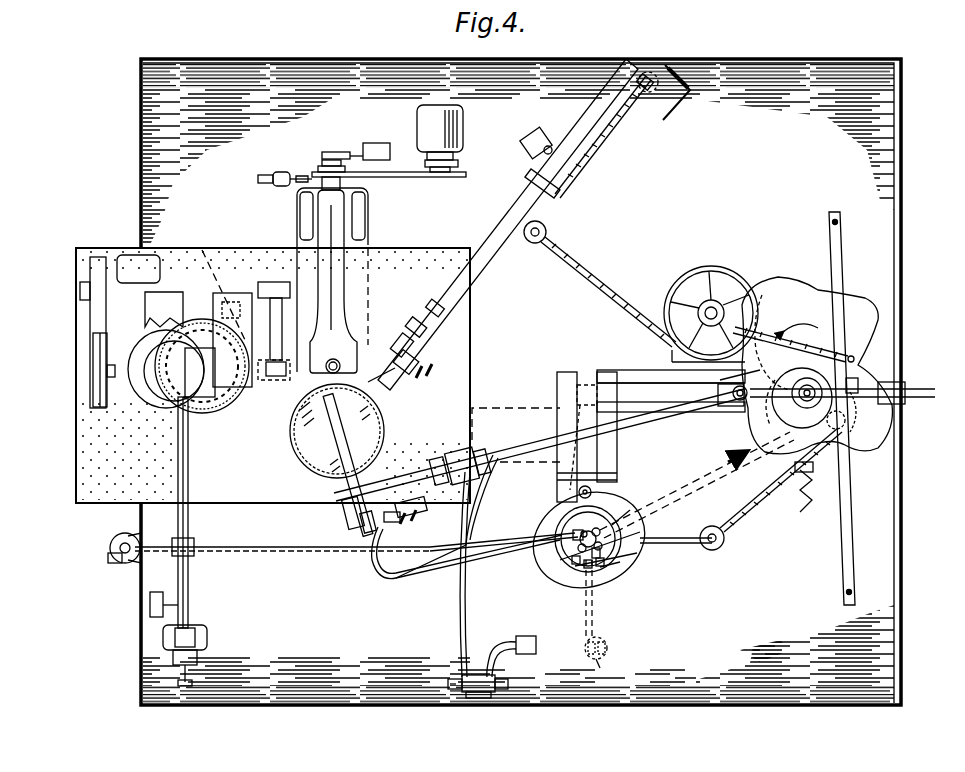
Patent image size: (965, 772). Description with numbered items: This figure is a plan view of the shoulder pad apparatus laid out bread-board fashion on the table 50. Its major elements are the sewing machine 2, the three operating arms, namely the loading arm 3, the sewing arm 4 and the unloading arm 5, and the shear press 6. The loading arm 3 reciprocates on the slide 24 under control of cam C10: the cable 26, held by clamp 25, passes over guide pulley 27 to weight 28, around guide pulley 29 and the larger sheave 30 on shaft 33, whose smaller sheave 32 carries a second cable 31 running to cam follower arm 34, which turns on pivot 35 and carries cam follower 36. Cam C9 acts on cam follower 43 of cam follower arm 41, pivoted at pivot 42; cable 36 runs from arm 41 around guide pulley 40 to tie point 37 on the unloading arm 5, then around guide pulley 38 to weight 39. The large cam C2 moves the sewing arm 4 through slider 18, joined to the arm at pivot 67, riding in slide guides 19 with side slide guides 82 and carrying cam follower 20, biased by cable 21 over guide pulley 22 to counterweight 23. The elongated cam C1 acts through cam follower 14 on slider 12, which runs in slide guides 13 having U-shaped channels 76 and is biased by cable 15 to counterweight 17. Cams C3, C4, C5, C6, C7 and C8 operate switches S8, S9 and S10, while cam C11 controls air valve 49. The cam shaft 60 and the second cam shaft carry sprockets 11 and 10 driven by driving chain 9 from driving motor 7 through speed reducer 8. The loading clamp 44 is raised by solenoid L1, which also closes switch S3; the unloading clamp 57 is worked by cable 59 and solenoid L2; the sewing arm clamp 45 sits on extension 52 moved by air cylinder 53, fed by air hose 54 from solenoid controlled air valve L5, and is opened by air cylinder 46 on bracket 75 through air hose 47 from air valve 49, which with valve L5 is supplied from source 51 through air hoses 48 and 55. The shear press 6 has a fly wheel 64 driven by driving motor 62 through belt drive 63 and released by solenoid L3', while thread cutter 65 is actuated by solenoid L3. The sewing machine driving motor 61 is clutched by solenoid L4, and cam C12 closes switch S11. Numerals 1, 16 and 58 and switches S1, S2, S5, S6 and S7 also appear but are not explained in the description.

The machine frame 1 is at (290, 440).
The sewing machine 2 is at (338, 268).
The loading arm 3 is at (492, 260).
The sewing arm 4 is at (520, 440).
The unloading arm 5 is at (190, 580).
The shear press 6 is at (232, 270).
The driving motor 7 is at (498, 410).
The speed reducer 8 is at (586, 375).
The driving chain 9 is at (698, 496).
The sprocket 10 is at (610, 575).
The sprocket 11 is at (785, 412).
The slider 12 is at (617, 480).
The slide guides 13 is at (617, 472).
The cam follower 14 is at (393, 460).
The cable 15 is at (596, 622).
The gear 16 is at (608, 650).
The counterweight 17 is at (604, 665).
The slider 18 is at (722, 408).
The slide guides 19 is at (675, 372).
The cam follower 20 is at (742, 405).
The cable 21 is at (397, 118).
The guide pulley 22 is at (898, 378).
The counterweight 23 is at (896, 404).
The slide 24 is at (606, 100).
The clamp 25 is at (562, 196).
The cable 26 is at (593, 155).
The guide pulley 27 is at (665, 97).
The weight 28 is at (652, 88).
The guide pulley 29 is at (548, 232).
The larger sheave 30 is at (727, 272).
The second cable 31 is at (766, 332).
The smaller sheave 32 is at (711, 301).
The shaft 33 is at (704, 315).
The cam follower arm 34 is at (845, 250).
The pivot 35 is at (832, 222).
The cable 36 is at (258, 547).
The tie point 37 is at (194, 545).
The guide pulley 38 is at (114, 560).
The weight 39 is at (112, 538).
The guide pulley 40 is at (722, 548).
The cam follower arm 41 is at (851, 498).
The pivot 42 is at (846, 592).
The cam follower 43 is at (844, 425).
The loading clamp 44 is at (370, 420).
The sewing arm clamp 45 is at (340, 440).
The air cylinder 46 is at (348, 515).
The air hose 47 is at (380, 574).
The air hose 48 is at (528, 592).
The air valve 49 is at (566, 522).
The table 50 is at (470, 700).
The source of pressurized air 51 is at (537, 645).
The extension 52 is at (438, 460).
The air cylinder 53 is at (462, 458).
The air hose 54 is at (468, 612).
The air hose 55 is at (506, 642).
The unloading clamp 57 is at (150, 345).
The rod 58 is at (178, 440).
The cable 59 is at (190, 445).
The cam shaft 60 is at (808, 384).
The sewing machine driving motor 61 is at (455, 118).
The driving motor 62 is at (148, 255).
The belt drive 63 is at (88, 305).
The fly wheel 64 is at (92, 370).
The thread cutter 65 is at (276, 382).
The pivot 67 is at (726, 380).
The bracket 75 is at (360, 528).
The U-shaped channels 76 is at (565, 372).
The side slide guides 82 is at (626, 374).
The elongated cam C1 is at (624, 555).
The large cam C2 is at (858, 300).
The cam C3 is at (620, 562).
The cam C4 is at (545, 560).
The cam C5 is at (596, 532).
The cam C6 is at (598, 546).
The cam C7 is at (542, 565).
The cam C8 is at (640, 532).
The cam C9 is at (809, 317).
The cam C10 is at (890, 440).
The cam C11 is at (640, 510).
The cam C12 is at (336, 152).
The solenoid L1 is at (418, 348).
The solenoid L2 is at (205, 636).
The solenoid L3 is at (266, 303).
The solenoid L3' is at (198, 239).
The solenoid L4 is at (280, 172).
The solenoid controlled air valve L5 is at (466, 675).
The switch S1 is at (388, 524).
The switch S2 is at (530, 140).
The switch S3 is at (418, 332).
The switch S5 is at (412, 506).
The switch S6 is at (150, 605).
The switch S7 is at (265, 184).
The switch S8 is at (574, 572).
The switch S9 is at (588, 564).
The switch S10 is at (576, 591).
The switch S11 is at (384, 136).